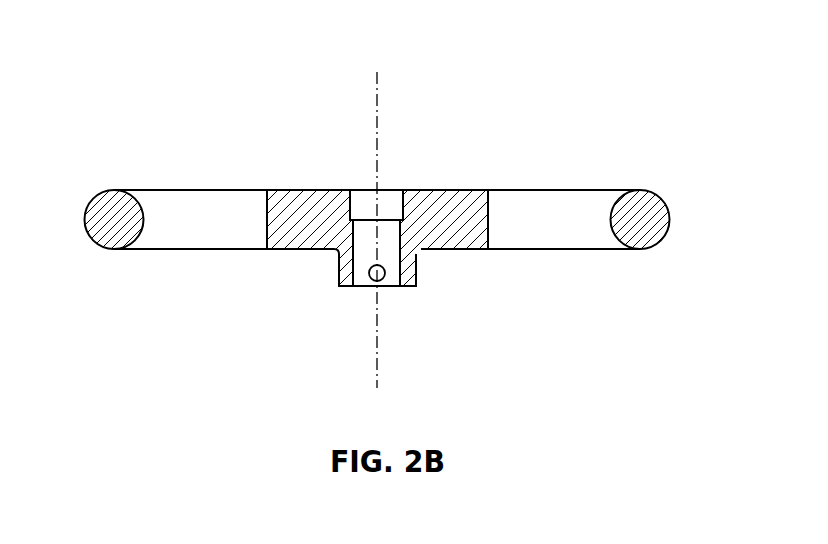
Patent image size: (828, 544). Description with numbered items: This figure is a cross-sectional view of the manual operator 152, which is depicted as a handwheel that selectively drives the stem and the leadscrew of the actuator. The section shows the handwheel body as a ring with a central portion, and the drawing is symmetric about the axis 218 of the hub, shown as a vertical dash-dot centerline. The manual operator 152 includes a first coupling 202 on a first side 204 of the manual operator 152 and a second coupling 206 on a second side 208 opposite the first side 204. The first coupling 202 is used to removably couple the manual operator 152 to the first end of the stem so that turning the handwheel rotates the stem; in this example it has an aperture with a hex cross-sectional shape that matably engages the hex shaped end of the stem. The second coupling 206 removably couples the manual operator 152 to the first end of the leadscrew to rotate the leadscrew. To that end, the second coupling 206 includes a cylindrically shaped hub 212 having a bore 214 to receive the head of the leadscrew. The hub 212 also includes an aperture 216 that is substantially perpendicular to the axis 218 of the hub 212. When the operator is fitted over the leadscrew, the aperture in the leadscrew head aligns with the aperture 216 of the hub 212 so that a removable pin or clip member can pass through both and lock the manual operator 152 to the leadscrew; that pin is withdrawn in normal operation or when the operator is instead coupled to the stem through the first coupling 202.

The manual operator 152 is at (374, 203).
The first coupling 202 is at (411, 235).
The first side 204 is at (167, 190).
The second coupling 206 is at (431, 262).
The second side 208 is at (168, 249).
The hub 212 is at (345, 268).
The bore 214 is at (389, 272).
The aperture 216 is at (365, 272).
The axis 218 is at (377, 88).